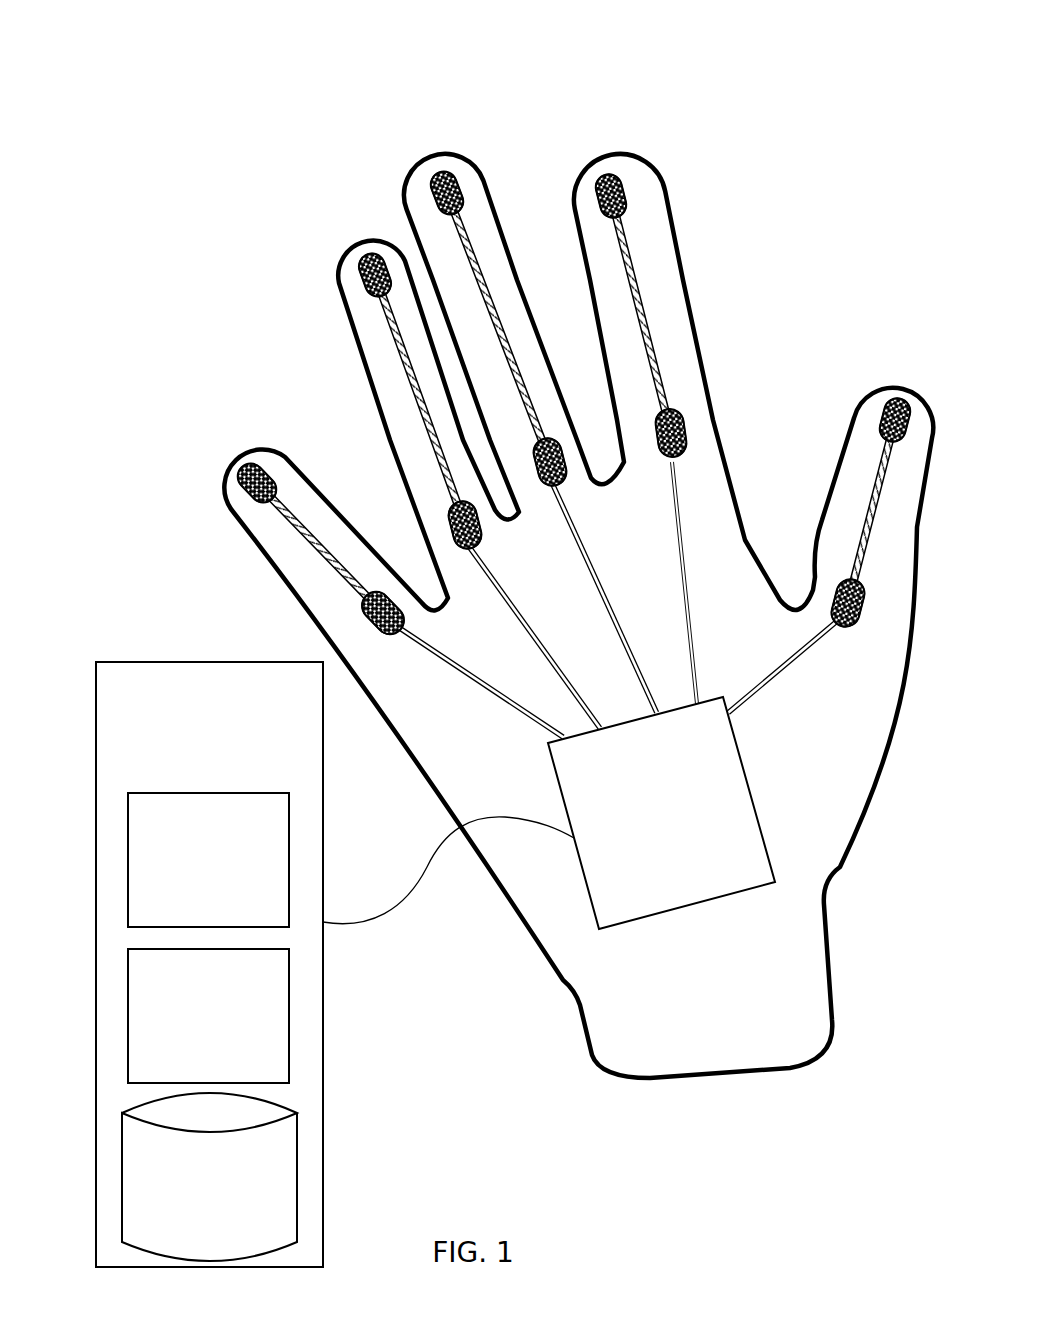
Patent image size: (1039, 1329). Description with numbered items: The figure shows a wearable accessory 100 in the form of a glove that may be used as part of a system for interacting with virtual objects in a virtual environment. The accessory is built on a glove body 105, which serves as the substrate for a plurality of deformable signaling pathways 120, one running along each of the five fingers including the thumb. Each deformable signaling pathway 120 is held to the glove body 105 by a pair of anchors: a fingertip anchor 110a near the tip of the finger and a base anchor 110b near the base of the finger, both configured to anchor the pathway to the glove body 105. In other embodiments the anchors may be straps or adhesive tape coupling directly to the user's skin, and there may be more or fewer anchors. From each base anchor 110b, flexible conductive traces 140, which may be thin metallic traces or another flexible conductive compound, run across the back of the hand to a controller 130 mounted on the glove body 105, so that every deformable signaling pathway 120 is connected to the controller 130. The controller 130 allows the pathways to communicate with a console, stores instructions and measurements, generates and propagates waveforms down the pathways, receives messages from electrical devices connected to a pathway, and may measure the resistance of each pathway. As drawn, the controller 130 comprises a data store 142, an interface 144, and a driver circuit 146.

The wearable accessory 100 is at (46, 86).
The glove body 105 is at (522, 900).
The fingertip anchor 110a is at (620, 175).
The base anchor 110b is at (673, 417).
The deformable signaling pathway 120 is at (466, 240).
The controller 130 is at (435, 964).
The flexible conductive traces 140 is at (690, 548).
The data store 142 is at (209, 1177).
The interface 144 is at (208, 1016).
The driver circuit 146 is at (208, 860).